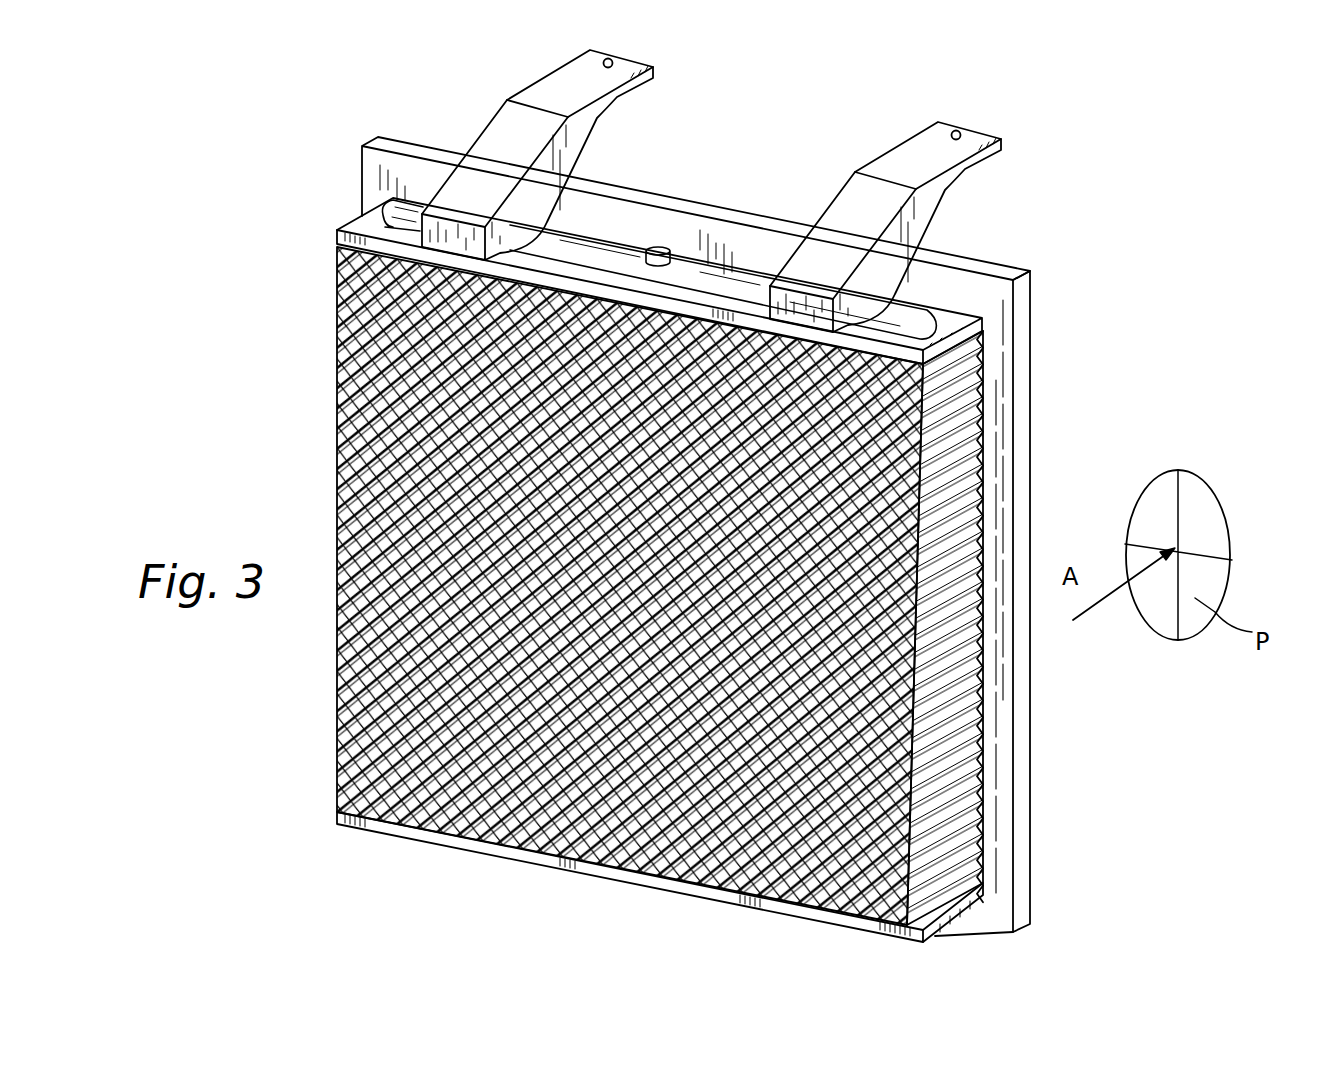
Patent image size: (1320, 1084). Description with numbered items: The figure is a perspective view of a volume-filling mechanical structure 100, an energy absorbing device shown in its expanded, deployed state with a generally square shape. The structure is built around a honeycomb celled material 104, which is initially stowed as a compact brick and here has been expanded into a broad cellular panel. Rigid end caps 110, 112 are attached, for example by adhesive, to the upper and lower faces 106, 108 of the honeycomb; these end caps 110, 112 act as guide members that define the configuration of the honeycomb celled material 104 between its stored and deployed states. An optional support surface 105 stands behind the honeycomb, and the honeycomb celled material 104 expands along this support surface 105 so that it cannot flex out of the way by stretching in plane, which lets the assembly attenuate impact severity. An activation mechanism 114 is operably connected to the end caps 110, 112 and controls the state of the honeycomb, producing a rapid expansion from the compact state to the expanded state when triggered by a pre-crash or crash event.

The volume-filling mechanical structure 100 is at (290, 186).
The honeycomb celled material 104 is at (962, 676).
The support surface 105 is at (1027, 852).
The upper face 106 is at (885, 355).
The lower face 108 is at (430, 828).
The end cap 110 is at (955, 343).
The end cap 112 is at (700, 903).
The activation mechanism 114 is at (660, 245).